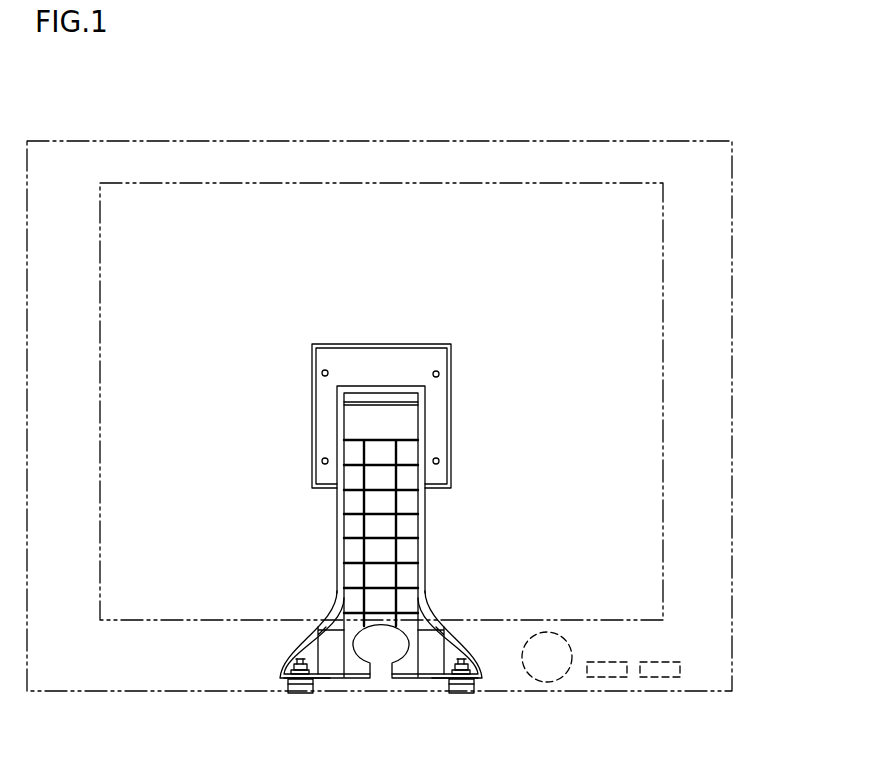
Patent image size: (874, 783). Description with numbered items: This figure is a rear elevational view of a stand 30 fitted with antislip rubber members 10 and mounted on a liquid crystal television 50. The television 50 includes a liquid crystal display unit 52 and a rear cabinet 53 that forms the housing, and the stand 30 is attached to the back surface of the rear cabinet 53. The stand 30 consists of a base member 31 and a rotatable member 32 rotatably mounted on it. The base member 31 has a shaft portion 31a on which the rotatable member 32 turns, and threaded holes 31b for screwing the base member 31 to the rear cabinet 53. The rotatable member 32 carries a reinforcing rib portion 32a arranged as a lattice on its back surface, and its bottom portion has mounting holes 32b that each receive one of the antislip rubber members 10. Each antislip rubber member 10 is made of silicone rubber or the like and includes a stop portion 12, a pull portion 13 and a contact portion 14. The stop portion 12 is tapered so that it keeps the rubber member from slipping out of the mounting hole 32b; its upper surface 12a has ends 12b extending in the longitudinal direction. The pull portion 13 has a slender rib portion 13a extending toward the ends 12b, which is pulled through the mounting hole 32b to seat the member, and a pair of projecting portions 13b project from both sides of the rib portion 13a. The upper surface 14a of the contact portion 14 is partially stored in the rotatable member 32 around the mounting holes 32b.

The antislip rubber member 10 is at (287, 695).
The stop portion 12 is at (173, 625).
The upper surface of the stop portion 12a is at (294, 661).
The ends of the stop portion 12b is at (291, 671).
The pull portion 13 is at (305, 560).
The rib portion 13a is at (303, 660).
The projecting portions 13b is at (299, 660).
The contact portion 14 is at (383, 718).
The upper surface of the contact portion 14a is at (300, 686).
The stand 30 is at (451, 330).
The base member 31 is at (451, 399).
The shaft portion 31a is at (383, 403).
The threaded holes 31b is at (322, 374).
The rotatable member 32 is at (343, 512).
The reinforcing rib portion 32a is at (398, 503).
The mounting holes 32b is at (407, 705).
The liquid crystal television 50 is at (621, 106).
The liquid crystal display unit 52 is at (300, 182).
The rear cabinet 53 is at (145, 140).